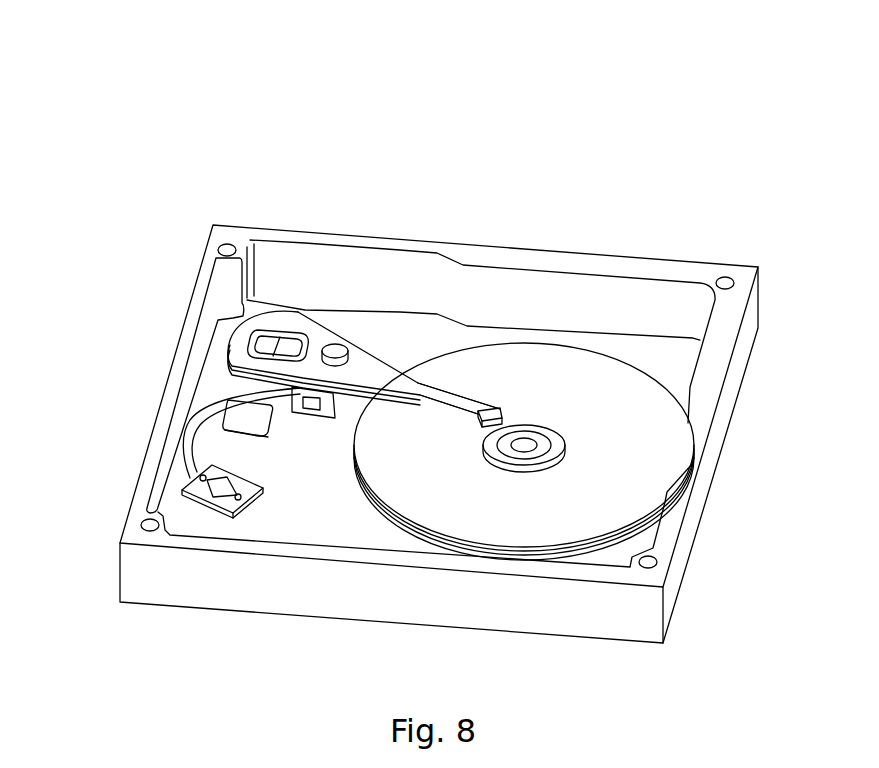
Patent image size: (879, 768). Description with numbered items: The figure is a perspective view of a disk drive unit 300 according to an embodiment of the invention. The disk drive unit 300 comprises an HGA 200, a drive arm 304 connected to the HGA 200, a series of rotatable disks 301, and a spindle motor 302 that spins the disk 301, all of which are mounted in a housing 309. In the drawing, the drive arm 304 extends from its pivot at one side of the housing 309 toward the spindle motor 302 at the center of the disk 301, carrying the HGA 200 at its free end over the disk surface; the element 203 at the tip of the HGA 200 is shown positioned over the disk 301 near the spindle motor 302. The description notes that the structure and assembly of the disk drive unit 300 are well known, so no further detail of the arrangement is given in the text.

The disk drive unit 300 is at (110, 88).
The housing 309 is at (690, 308).
The rotatable disk 301 is at (602, 387).
The spindle motor 302 is at (525, 443).
The drive arm 304 is at (352, 356).
The HGA 200 is at (427, 393).
The slider 203 is at (489, 414).